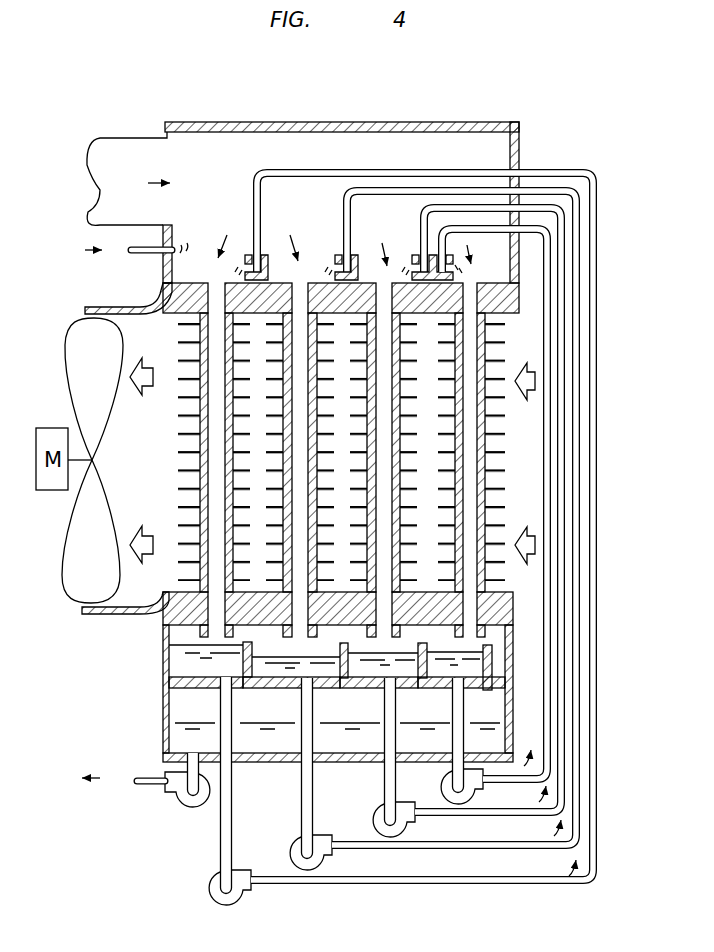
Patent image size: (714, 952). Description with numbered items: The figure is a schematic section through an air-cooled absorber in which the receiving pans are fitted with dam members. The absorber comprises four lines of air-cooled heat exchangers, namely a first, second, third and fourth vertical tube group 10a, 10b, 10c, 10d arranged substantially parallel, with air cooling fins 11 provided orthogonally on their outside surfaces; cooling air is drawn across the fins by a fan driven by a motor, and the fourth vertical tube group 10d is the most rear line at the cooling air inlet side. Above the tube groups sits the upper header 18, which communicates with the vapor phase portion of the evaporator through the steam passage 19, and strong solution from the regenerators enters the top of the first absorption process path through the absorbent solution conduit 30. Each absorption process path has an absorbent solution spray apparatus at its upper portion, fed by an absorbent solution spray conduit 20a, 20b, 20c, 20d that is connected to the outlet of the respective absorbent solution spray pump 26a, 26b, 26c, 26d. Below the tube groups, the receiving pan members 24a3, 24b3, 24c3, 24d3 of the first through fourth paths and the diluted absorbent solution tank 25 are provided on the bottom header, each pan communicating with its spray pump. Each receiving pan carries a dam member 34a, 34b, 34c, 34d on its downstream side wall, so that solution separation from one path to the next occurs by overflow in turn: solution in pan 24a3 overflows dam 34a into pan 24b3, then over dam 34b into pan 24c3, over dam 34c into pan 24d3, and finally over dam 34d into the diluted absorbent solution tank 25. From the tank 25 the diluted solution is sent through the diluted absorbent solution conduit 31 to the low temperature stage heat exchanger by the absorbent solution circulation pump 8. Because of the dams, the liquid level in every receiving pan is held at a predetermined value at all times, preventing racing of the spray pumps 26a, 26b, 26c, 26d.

The absorbent solution circulation pump 8 is at (191, 809).
The first vertical tube group 10a is at (200, 473).
The second vertical tube group 10b is at (285, 462).
The third vertical tube group 10c is at (393, 497).
The fourth vertical tube group 10d is at (485, 462).
The air cooling fins 11 is at (180, 353).
The upper header 18 is at (207, 138).
The steam passage 19 is at (130, 148).
The absorbent solution spray conduit 20a is at (533, 170).
The absorbent solution spray conduit 20b is at (340, 206).
The absorbent solution spray conduit 20c is at (420, 222).
The absorbent solution spray conduit 20d is at (490, 223).
The receiving pan member 24a3 is at (178, 665).
The receiving pan member 24b3 is at (277, 680).
The receiving pan member 24c3 is at (360, 678).
The receiving pan member 24d3 is at (440, 678).
The diluted absorbent solution tank 25 is at (177, 700).
The absorbent solution spray pump 26a is at (242, 900).
The absorbent solution spray pump 26b is at (320, 865).
The absorbent solution spray pump 26c is at (403, 832).
The absorbent solution spray pump 26d is at (470, 799).
The absorbent solution conduit 30 is at (148, 257).
The diluted absorbent solution conduit 31 is at (148, 772).
The dam member 34a is at (243, 646).
The dam member 34b is at (348, 655).
The dam member 34c is at (427, 653).
The dam member 34d is at (492, 663).